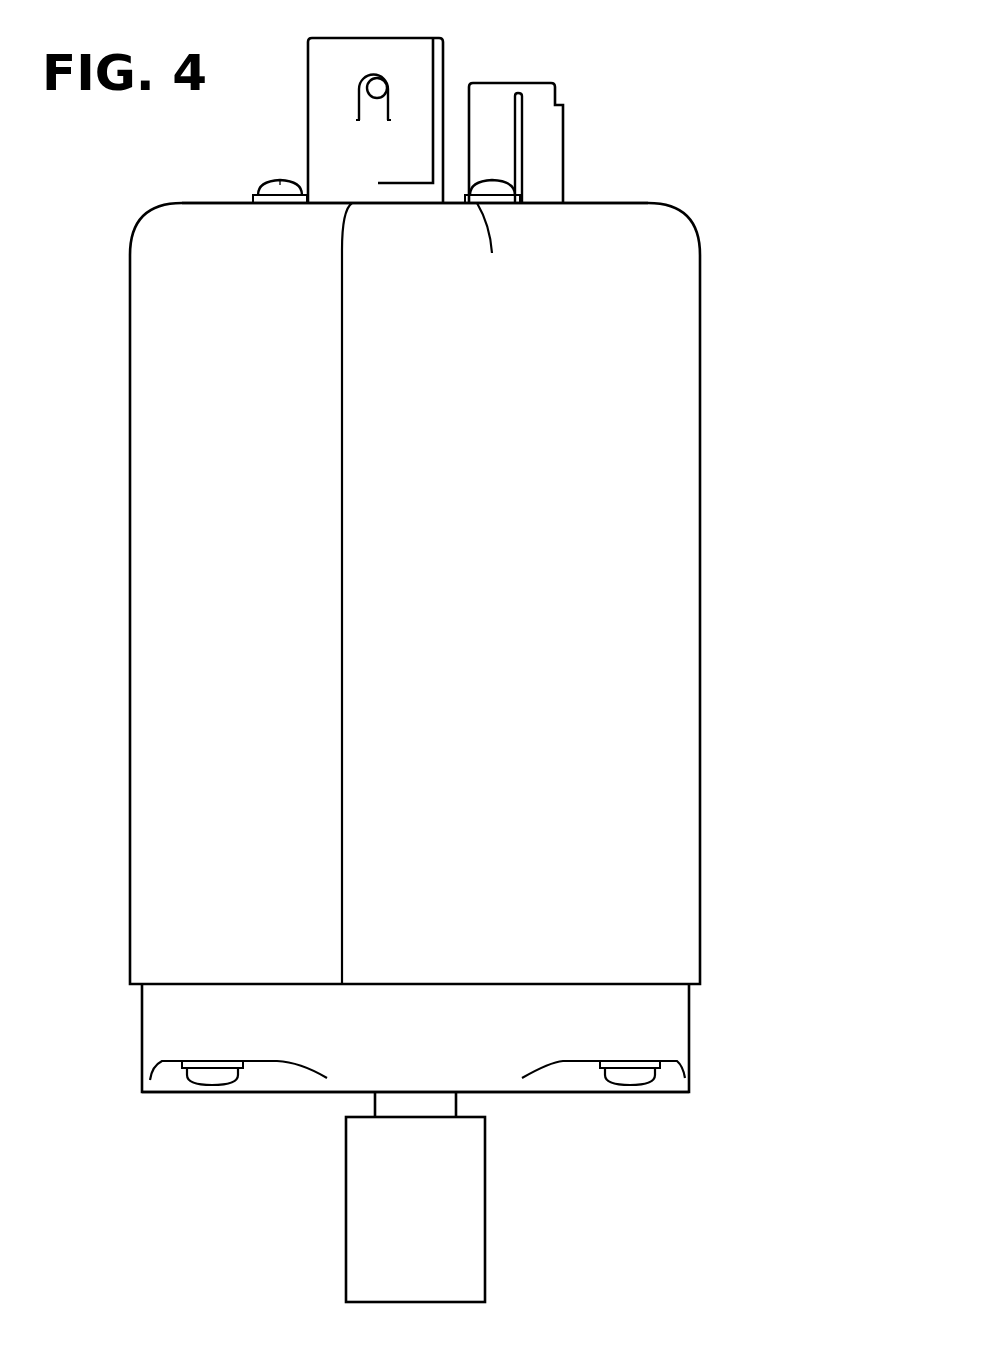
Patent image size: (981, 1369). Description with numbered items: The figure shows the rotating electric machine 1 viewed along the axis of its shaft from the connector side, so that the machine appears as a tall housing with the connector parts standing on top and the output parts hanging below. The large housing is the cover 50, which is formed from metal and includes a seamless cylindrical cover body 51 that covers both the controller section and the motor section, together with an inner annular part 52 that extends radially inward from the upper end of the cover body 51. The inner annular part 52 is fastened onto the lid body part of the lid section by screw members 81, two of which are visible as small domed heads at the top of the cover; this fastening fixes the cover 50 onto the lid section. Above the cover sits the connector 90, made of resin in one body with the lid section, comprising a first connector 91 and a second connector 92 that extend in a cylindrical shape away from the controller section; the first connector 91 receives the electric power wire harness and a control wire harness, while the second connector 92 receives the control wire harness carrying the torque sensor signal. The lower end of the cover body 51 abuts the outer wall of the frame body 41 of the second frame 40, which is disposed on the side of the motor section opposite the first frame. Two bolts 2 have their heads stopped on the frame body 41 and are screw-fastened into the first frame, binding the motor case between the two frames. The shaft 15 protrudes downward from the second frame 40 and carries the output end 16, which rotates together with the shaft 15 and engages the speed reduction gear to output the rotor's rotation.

The rotating electric machine 1 is at (614, 68).
The bolt 2 is at (212, 1076).
The shaft 15 is at (447, 1103).
The output end 16 is at (468, 1200).
The second frame 40 is at (693, 1003).
The frame body 41 is at (680, 1028).
The cover 50 is at (703, 373).
The cover body 51 is at (683, 516).
The inner annular part 52 is at (604, 201).
The screw member 81 is at (280, 186).
The connector 90 is at (306, 48).
The first connector 91 is at (315, 95).
The second connector 92 is at (563, 113).